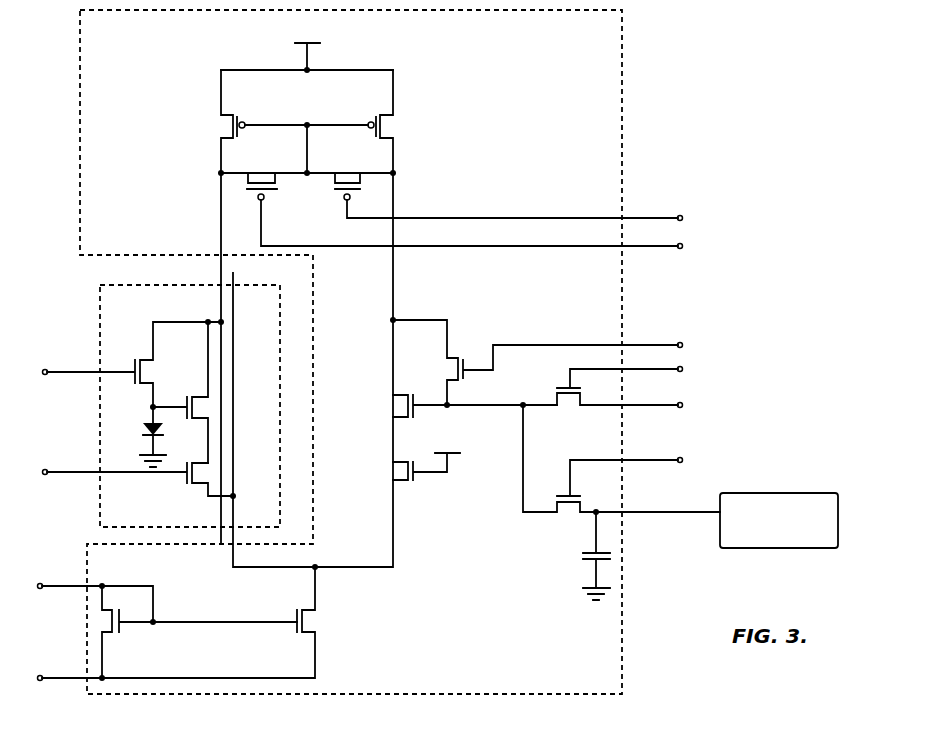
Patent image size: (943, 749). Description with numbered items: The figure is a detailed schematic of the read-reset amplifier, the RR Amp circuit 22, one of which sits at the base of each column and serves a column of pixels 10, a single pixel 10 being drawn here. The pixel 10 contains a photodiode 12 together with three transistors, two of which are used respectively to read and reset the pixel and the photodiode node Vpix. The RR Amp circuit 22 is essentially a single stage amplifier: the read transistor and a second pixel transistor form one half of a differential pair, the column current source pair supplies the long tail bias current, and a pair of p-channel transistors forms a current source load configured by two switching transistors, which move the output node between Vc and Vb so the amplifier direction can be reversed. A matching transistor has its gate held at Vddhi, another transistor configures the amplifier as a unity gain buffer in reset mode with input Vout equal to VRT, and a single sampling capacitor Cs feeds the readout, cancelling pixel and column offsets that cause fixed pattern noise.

The pixel 10 is at (98, 311).
The photodiode 12 is at (142, 437).
The RR Amp circuit 22 is at (623, 92).